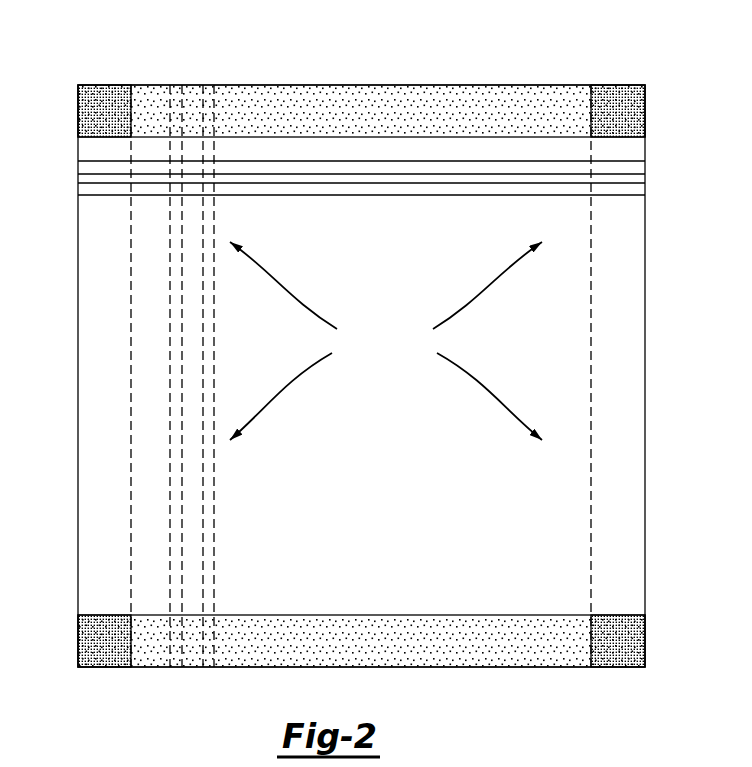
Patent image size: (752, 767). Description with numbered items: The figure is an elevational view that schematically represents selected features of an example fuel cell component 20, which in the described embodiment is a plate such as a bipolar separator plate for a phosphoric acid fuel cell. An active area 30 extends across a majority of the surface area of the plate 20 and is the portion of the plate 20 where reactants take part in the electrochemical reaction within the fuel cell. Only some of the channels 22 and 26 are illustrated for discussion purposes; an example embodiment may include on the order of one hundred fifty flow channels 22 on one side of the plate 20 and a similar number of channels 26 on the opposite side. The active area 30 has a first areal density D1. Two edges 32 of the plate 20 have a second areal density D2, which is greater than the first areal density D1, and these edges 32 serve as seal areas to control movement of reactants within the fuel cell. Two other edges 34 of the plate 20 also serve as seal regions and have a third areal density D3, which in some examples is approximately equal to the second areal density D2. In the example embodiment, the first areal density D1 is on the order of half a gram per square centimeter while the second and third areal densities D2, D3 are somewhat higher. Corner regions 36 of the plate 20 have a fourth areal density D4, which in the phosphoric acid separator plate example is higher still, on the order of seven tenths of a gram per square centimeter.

The fuel cell component 20 is at (498, 27).
The flow channels 22 is at (627, 167).
The channels 26 is at (170, 668).
The active area 30 is at (396, 392).
The edges 32 is at (430, 100).
The edges 34 is at (97, 461).
The corner regions 36 is at (103, 118).
The first areal density D1 is at (383, 424).
The second areal density D2 is at (297, 104).
The third areal density D3 is at (613, 325).
The fourth areal density D4 is at (618, 101).